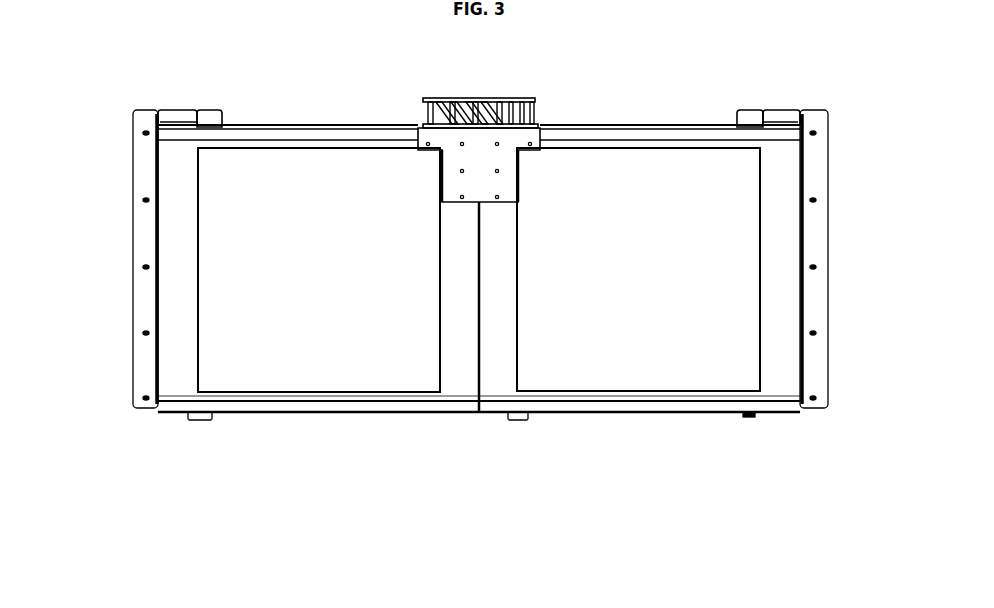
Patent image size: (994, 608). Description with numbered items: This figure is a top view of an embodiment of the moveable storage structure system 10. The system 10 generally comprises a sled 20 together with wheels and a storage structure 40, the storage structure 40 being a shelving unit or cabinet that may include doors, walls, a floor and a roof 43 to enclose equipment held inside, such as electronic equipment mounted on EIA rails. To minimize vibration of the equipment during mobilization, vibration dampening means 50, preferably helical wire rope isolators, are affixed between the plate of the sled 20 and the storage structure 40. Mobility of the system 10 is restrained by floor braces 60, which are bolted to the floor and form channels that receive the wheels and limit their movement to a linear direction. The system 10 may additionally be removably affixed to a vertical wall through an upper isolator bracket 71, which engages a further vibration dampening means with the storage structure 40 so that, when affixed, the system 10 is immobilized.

The moveable storage structure system 10 is at (802, 447).
The sled 20 is at (480, 206).
The storage structure 40 is at (558, 418).
The roof 43 is at (342, 328).
The vibration dampening means 50 is at (425, 99).
The floor brace 60 is at (137, 367).
The upper isolator bracket 71 is at (503, 152).